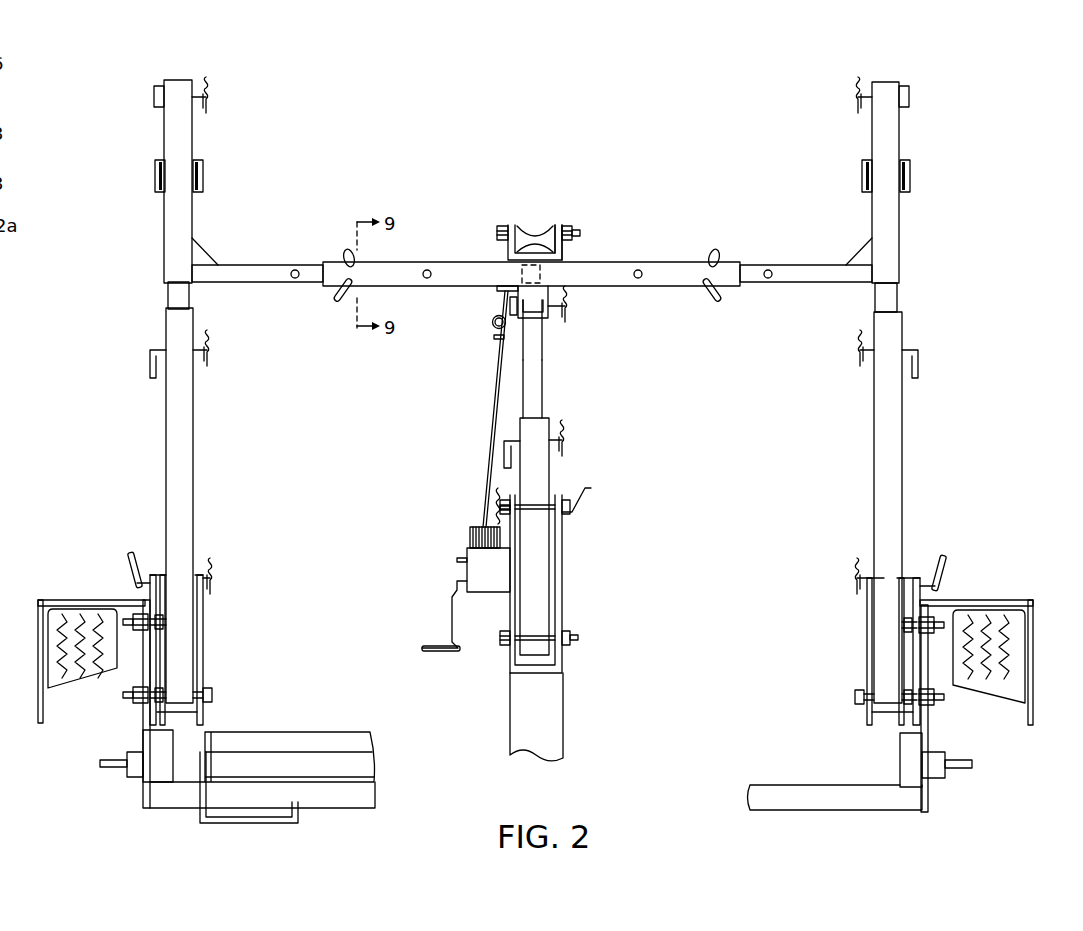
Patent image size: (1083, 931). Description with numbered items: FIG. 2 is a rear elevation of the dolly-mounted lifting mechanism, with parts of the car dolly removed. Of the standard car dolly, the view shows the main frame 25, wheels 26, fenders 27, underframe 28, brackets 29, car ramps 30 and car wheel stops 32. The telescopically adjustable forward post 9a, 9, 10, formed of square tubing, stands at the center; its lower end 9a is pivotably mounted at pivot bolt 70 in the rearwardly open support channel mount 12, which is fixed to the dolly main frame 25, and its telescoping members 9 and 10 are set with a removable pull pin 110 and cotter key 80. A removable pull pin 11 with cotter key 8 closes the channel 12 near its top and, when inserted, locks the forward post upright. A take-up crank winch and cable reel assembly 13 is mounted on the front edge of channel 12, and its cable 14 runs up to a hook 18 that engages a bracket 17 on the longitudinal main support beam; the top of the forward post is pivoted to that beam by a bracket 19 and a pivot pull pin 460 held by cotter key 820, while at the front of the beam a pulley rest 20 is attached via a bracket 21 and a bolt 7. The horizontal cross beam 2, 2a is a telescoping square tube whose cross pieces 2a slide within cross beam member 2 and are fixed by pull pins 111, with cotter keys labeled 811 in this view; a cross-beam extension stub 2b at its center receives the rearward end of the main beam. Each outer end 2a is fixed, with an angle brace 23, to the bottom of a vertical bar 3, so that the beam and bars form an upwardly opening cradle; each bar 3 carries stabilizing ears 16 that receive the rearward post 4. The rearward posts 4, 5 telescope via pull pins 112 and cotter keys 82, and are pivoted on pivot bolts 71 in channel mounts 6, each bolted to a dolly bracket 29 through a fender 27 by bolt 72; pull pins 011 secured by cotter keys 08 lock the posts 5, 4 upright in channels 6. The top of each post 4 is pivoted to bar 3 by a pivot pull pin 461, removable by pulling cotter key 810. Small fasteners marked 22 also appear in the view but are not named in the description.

The cross beam member 2 is at (655, 262).
The horizontal cross piece 2a is at (282, 282).
The cross-beam extension stub 2b is at (522, 270).
The vertical bar 3 is at (192, 130).
The rearward post 4 is at (168, 298).
The rearward post 5 is at (193, 410).
The channel mount 6 is at (204, 678).
The bolt 7 is at (497, 231).
The cotter key 8 is at (494, 497).
The forward post member 9 is at (546, 402).
The forward post lower end 9a is at (549, 480).
The forward post member 10 is at (523, 338).
The pull pin 11 is at (590, 490).
The support channel mount 12 is at (562, 548).
The take-up crank winch and cable reel assembly 13 is at (470, 540).
The cable 14 is at (493, 410).
The stabilizing ear 16 is at (155, 178).
The bracket 17 is at (497, 290).
The hook 18 is at (494, 324).
The bracket 19 is at (548, 320).
The pulley rest 20 is at (517, 226).
The bracket 21 is at (557, 225).
The nut 22 is at (133, 632).
The angle brace 23 is at (197, 245).
The main frame 25 is at (563, 725).
The wheels 26 is at (55, 662).
The fenders 27 is at (72, 600).
The underframe 28 is at (815, 785).
The brackets 29 is at (143, 743).
The car ramps 30 is at (360, 782).
The car wheel stops 32 is at (275, 732).
The pivot bolt 70 is at (500, 645).
The pivot bolt 71 is at (212, 697).
The bolt 72 is at (160, 622).
The cotter key 80 is at (565, 425).
The cotter key 82 is at (207, 332).
The cotter key 08 is at (208, 568).
The pull pin 011 is at (128, 556).
The pull pin 110 is at (504, 452).
The pull pin 111 is at (335, 303).
The pull pin 112 is at (150, 352).
The pivot pull pin 460 is at (553, 318).
The pivot pull pin 461 is at (155, 97).
The cotter key 810 is at (204, 78).
The pin head 811 is at (343, 250).
The cotter key 820 is at (572, 293).